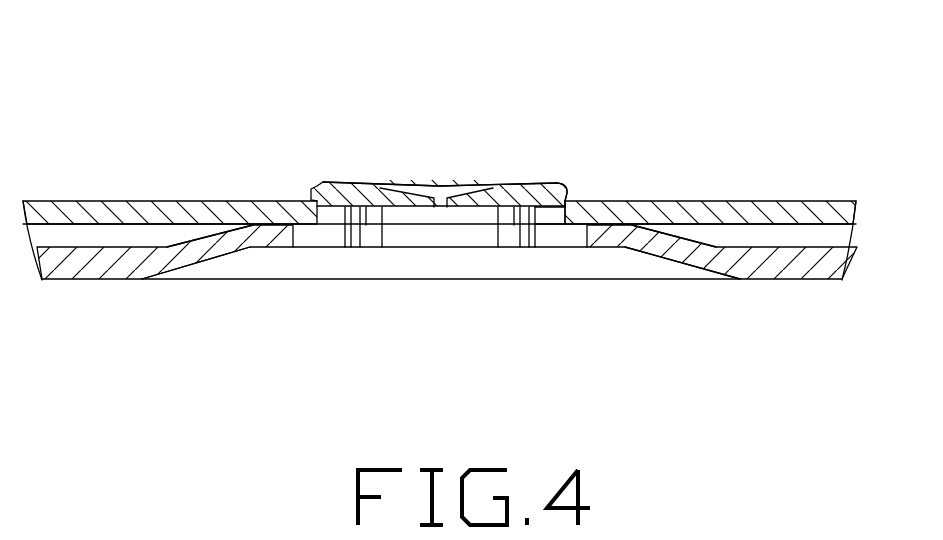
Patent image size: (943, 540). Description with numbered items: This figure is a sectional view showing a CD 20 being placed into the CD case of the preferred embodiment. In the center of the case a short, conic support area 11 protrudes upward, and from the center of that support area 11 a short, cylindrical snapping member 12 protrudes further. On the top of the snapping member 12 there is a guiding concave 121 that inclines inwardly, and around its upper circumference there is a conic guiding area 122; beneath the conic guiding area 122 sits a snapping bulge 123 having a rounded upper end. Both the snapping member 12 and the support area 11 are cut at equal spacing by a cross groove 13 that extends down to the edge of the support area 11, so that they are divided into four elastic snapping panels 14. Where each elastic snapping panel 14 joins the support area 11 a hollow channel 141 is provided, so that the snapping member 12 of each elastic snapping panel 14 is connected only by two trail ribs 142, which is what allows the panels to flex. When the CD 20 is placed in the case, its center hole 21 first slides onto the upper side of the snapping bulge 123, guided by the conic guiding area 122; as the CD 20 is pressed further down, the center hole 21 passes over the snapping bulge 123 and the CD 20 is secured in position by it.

The support area 11 is at (277, 201).
The snapping member 12 is at (538, 183).
The guiding concave 121 is at (440, 187).
The conic guiding area 122 is at (567, 192).
The snapping bulge 123 is at (570, 196).
The cross groove 13 is at (385, 185).
The elastic snapping panel 14 is at (668, 237).
The hollow channel 141 is at (318, 238).
The trail rib 142 is at (352, 235).
The CD 20 is at (758, 200).
The center hole 21 is at (562, 213).